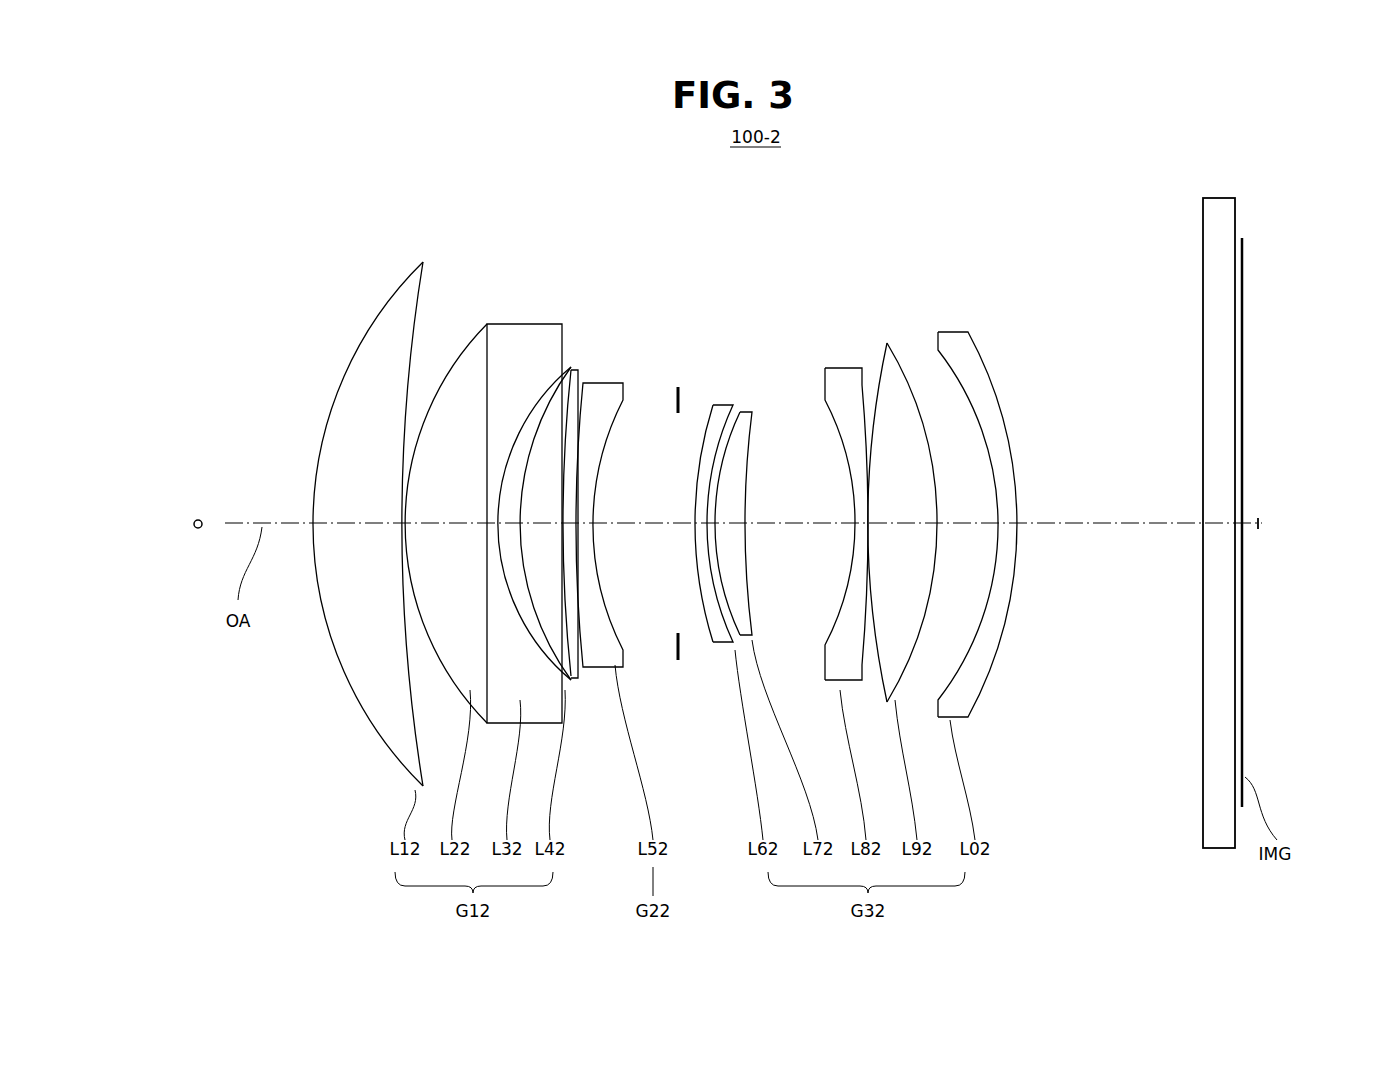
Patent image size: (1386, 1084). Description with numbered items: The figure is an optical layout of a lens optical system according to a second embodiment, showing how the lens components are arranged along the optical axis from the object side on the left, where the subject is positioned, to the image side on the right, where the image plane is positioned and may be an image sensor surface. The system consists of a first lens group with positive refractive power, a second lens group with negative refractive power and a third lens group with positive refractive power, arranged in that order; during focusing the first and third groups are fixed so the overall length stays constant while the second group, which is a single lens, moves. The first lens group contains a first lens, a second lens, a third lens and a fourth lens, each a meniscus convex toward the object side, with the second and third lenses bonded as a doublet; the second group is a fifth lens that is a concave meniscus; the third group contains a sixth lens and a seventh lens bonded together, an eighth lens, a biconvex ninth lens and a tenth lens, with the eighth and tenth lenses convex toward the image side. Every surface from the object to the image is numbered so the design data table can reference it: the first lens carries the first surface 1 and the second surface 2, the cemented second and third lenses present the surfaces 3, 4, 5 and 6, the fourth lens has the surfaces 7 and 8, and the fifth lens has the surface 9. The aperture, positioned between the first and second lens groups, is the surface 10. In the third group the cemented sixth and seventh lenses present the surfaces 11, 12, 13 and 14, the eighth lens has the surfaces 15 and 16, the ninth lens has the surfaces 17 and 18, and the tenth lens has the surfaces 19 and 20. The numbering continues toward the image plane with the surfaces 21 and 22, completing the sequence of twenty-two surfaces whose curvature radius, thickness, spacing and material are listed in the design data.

The lens surface 1 is at (360, 345).
The lens surface 2 is at (412, 348).
The lens surface 3 is at (447, 368).
The lens surface 4 is at (486, 375).
The lens surface 5 is at (512, 443).
The lens surface 6 is at (537, 407).
The lens surface 7 is at (571, 395).
The lens surface 8 is at (583, 420).
The lens surface 9 is at (610, 420).
The aperture surface 10 is at (676, 387).
The lens surface 11 is at (698, 420).
The lens surface 12 is at (733, 407).
The lens surface 13 is at (738, 412).
The lens surface 14 is at (758, 430).
The lens surface 15 is at (835, 395).
The lens surface 16 is at (862, 385).
The lens surface 17 is at (880, 360).
The lens surface 18 is at (905, 365).
The lens surface 19 is at (955, 372).
The lens surface 20 is at (990, 380).
The surface 21 is at (1203, 228).
The surface 22 is at (1245, 312).